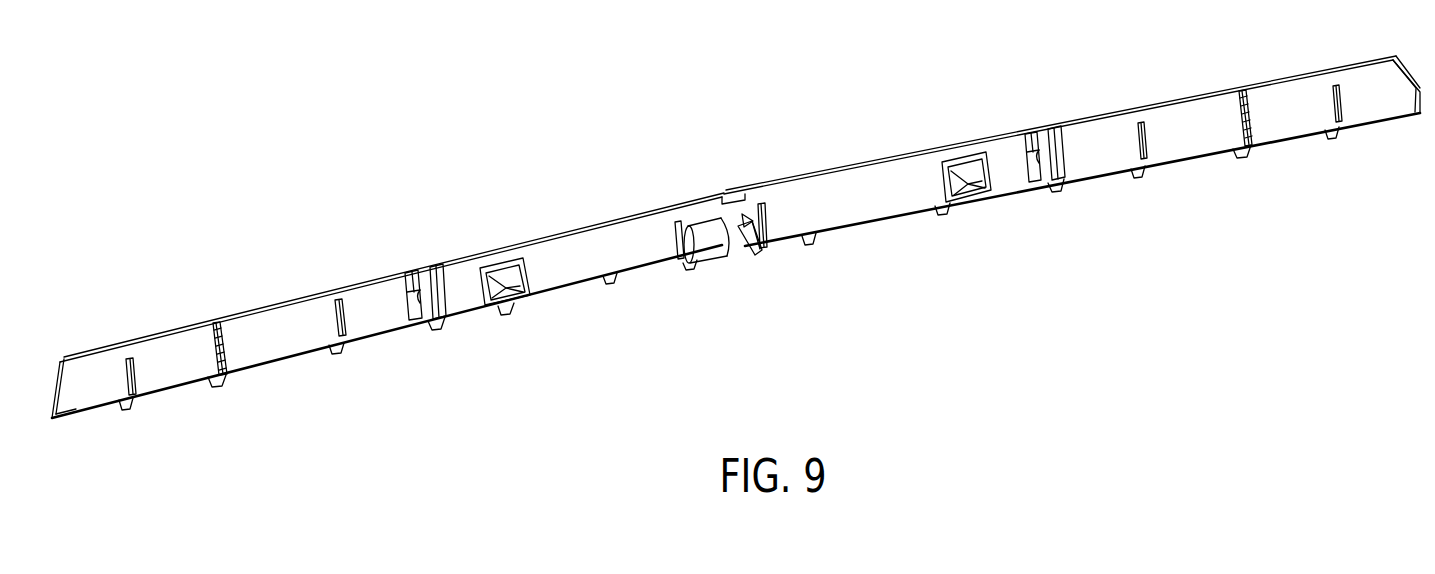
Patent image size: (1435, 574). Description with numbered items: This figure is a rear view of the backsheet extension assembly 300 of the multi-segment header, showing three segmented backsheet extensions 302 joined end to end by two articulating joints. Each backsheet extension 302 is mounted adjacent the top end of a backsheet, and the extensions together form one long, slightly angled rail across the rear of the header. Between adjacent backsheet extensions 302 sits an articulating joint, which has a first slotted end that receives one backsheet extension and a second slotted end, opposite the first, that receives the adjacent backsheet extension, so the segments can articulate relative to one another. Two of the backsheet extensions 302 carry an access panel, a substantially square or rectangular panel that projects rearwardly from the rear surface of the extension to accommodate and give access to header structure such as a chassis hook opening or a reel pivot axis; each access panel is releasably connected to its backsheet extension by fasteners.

The backsheet extension assembly 300 is at (730, 161).
The backsheet extension 302 is at (240, 314).